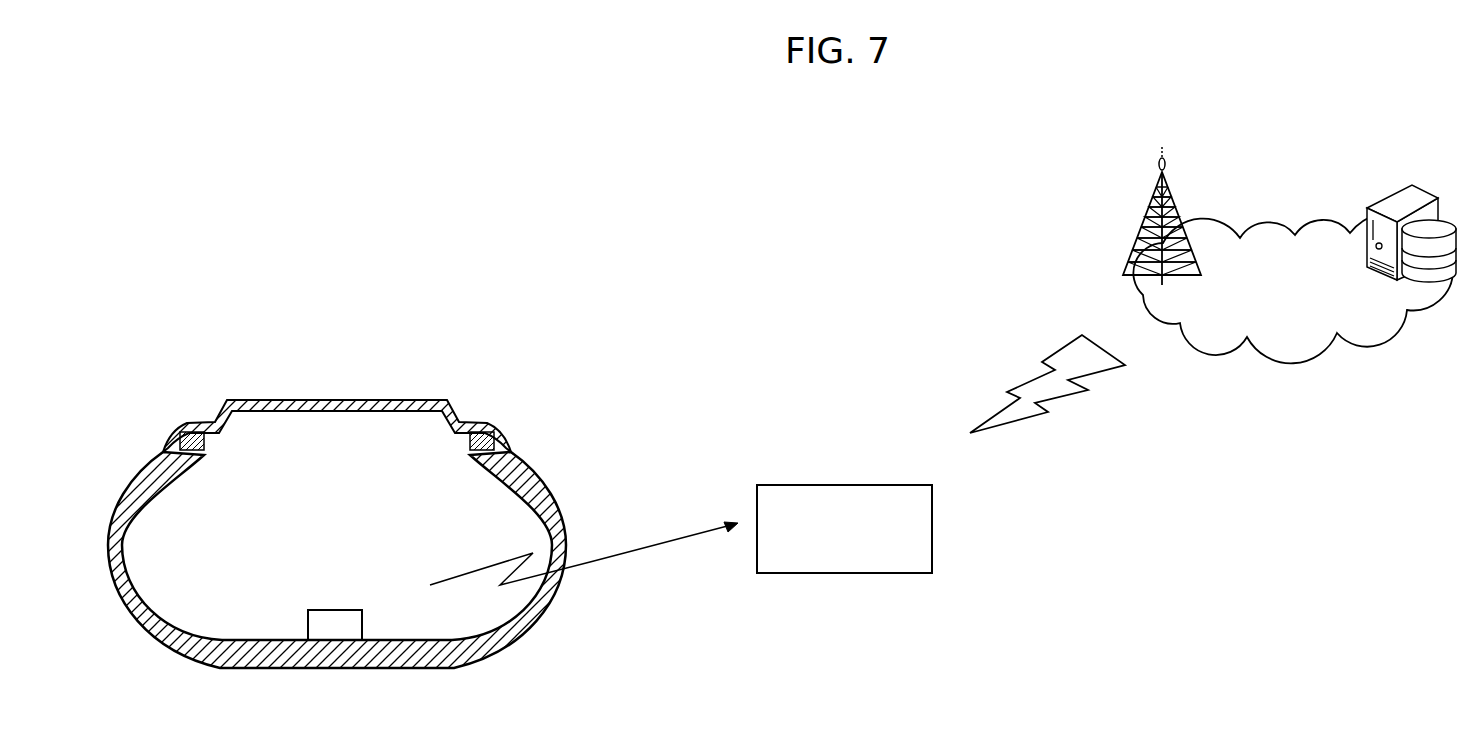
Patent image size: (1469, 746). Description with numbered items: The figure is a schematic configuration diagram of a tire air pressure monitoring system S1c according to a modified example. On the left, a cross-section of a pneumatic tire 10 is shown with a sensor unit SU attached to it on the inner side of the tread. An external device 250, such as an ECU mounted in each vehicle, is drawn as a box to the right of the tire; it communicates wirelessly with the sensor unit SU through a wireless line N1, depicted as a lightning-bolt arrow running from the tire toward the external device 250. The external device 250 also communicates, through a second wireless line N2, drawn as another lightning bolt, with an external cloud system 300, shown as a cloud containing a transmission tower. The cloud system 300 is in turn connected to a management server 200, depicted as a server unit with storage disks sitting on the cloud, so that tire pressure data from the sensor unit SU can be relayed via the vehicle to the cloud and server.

The pneumatic tire 10 is at (532, 462).
The sensor unit SU is at (338, 608).
The wireless line N1 is at (584, 556).
The external device 250 is at (864, 485).
The tire air pressure monitoring system S1c is at (930, 228).
The wireless line N2 is at (1047, 384).
The cloud system 300 is at (1290, 352).
The management server 200 is at (1390, 200).